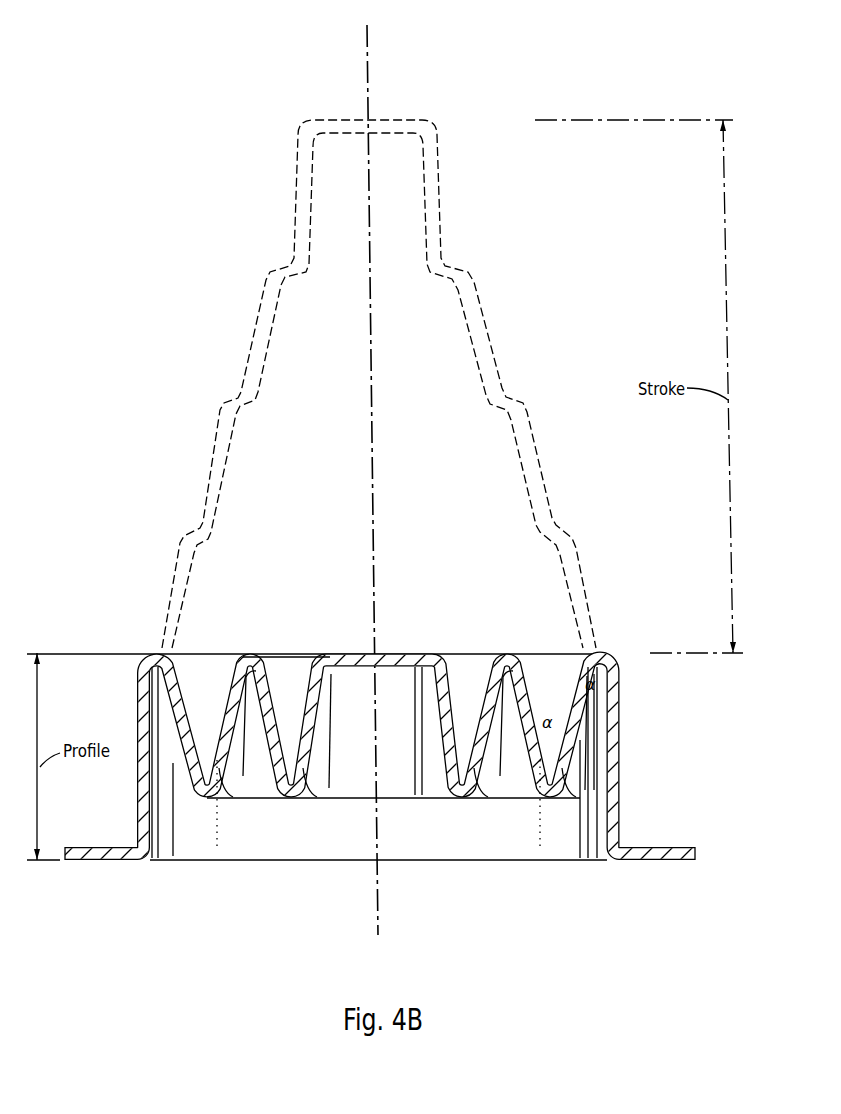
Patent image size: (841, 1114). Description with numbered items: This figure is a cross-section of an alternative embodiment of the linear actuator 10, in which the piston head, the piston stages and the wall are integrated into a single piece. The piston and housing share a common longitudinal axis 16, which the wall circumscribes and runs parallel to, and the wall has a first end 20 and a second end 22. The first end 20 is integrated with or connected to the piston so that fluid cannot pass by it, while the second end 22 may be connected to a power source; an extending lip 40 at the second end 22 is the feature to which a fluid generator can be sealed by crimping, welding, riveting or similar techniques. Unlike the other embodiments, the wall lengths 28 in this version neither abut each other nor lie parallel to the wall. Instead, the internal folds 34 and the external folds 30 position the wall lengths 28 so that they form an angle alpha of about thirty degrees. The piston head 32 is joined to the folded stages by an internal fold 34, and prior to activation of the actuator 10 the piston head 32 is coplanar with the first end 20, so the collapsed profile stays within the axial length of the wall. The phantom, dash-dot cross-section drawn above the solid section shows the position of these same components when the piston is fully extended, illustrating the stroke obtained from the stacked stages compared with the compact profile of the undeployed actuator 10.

The linear actuator 10 is at (216, 115).
The longitudinal axis 16 is at (369, 52).
The first end 20 is at (626, 647).
The second end 22 is at (634, 834).
The wall length 28 is at (575, 722).
The external fold 30 is at (504, 660).
The piston head 32 is at (397, 660).
The internal fold 34 is at (432, 760).
The lip 40 is at (665, 861).